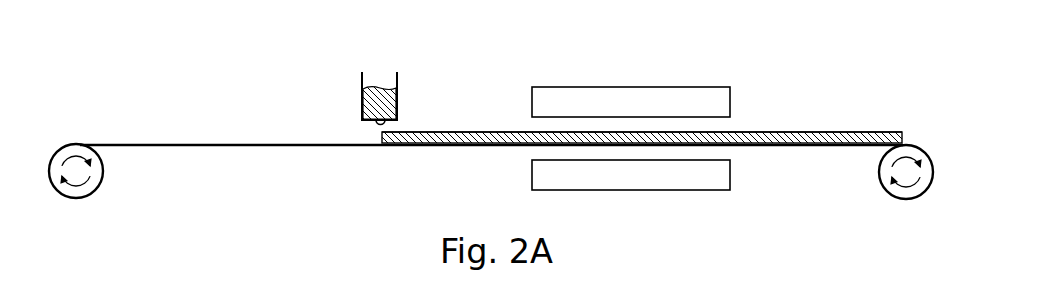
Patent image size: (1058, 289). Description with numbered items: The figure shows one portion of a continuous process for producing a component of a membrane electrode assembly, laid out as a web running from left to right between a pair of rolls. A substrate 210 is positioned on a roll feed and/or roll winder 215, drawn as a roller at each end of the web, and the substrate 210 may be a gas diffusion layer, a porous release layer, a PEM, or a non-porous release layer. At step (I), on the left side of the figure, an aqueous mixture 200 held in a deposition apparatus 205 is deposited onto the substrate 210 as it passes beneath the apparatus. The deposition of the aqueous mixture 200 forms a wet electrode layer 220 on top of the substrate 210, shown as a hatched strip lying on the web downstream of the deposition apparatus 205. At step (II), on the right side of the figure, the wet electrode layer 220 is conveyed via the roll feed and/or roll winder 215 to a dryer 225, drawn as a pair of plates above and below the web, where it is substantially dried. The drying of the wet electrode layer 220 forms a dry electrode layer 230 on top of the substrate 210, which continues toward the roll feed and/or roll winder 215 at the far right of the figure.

The aqueous mixture 200 is at (375, 104).
The deposition apparatus 205 is at (406, 77).
The substrate 210 is at (122, 159).
The roll feed and/or roll winder 215 is at (63, 129).
The wet electrode layer 220 is at (482, 121).
The dryer 225 is at (662, 80).
The dry electrode layer 230 is at (844, 122).
The step I is at (153, 52).
The step II is at (781, 79).